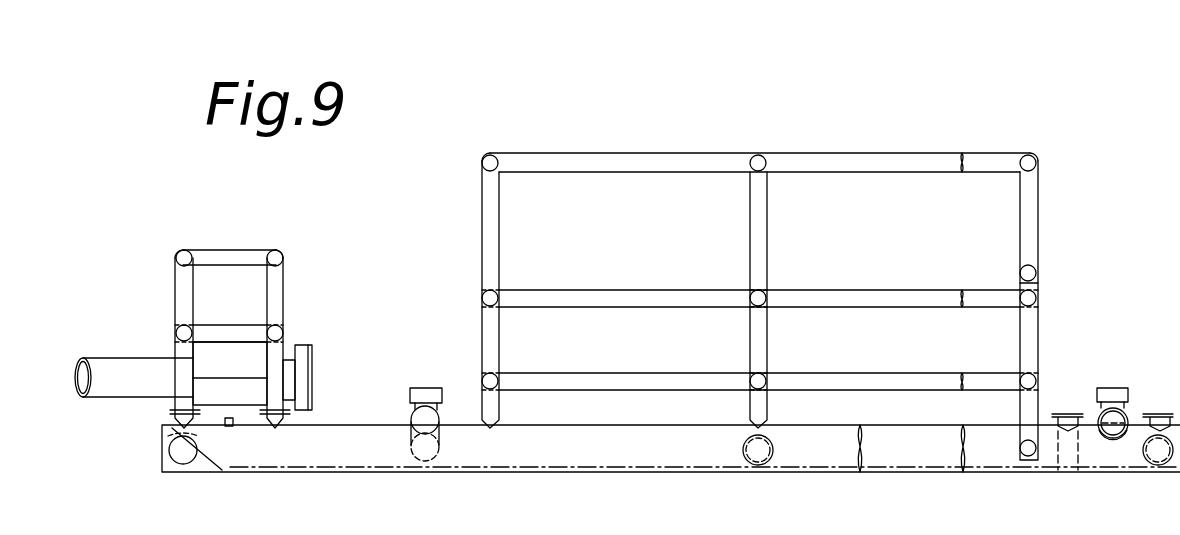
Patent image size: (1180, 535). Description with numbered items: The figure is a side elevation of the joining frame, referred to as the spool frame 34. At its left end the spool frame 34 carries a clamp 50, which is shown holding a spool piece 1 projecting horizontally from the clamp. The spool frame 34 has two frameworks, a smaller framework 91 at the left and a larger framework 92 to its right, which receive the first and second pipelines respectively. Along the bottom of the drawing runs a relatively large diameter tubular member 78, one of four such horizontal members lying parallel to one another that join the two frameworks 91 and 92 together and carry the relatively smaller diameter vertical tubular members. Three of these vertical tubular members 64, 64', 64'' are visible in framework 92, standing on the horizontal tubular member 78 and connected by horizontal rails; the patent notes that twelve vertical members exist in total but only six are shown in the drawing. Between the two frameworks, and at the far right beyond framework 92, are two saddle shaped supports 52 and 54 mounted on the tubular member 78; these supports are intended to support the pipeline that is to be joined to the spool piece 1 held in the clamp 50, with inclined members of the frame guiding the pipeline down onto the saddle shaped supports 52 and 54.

The spool piece 1 is at (121, 386).
The spool frame 34 is at (421, 212).
The clamp 50 is at (200, 358).
The saddle shaped support 52 is at (427, 388).
The saddle shaped support 54 is at (1110, 392).
The vertical tubular member 64 is at (783, 300).
The vertical tubular member 64' is at (519, 294).
The vertical tubular member 64'' is at (1059, 310).
The tubular member 78 is at (328, 452).
The framework 91 is at (300, 247).
The framework 92 is at (790, 282).